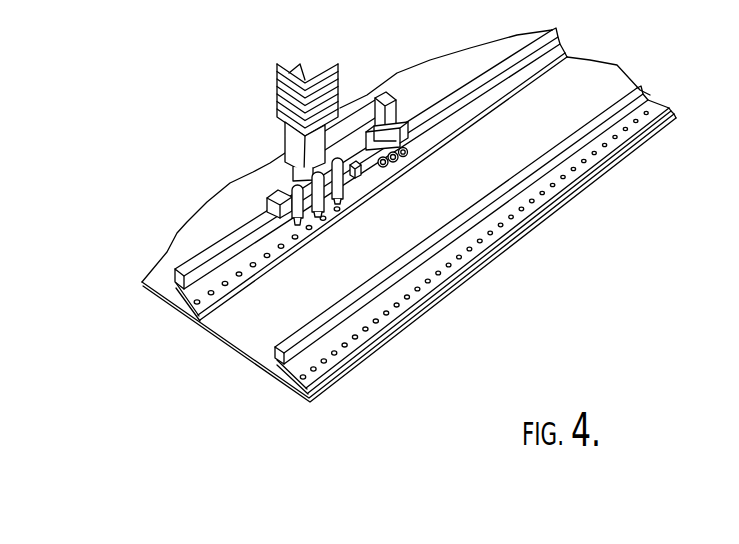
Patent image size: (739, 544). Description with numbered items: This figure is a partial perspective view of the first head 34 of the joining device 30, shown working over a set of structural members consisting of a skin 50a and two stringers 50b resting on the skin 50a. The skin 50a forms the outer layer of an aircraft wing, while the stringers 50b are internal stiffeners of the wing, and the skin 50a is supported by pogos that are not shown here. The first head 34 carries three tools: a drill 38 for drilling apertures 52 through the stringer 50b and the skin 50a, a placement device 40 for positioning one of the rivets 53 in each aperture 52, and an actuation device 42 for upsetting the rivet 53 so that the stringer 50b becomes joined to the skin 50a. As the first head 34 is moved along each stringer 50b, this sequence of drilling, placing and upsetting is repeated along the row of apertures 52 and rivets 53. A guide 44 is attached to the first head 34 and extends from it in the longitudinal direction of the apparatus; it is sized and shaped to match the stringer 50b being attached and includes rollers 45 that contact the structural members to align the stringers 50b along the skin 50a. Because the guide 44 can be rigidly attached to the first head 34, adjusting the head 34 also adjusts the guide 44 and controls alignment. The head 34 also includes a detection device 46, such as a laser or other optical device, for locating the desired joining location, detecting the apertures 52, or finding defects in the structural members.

The joining device 30 is at (407, 146).
The first head 34 is at (297, 147).
The drill 38 is at (344, 186).
The placement device 40 is at (325, 198).
The actuation device 42 is at (302, 213).
The guide 44 is at (382, 110).
The rollers 45 is at (400, 158).
The detection device 46 is at (356, 162).
The skin 50a is at (240, 337).
The stringers 50b is at (178, 268).
The apertures 52 is at (304, 197).
The rivets 53 is at (294, 240).